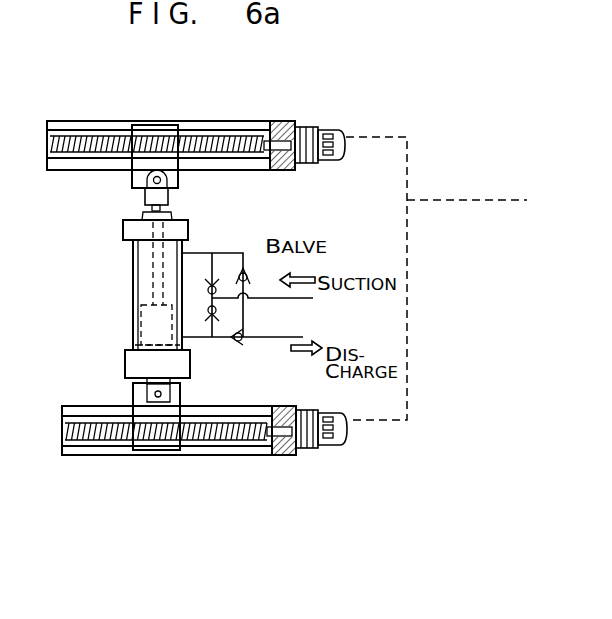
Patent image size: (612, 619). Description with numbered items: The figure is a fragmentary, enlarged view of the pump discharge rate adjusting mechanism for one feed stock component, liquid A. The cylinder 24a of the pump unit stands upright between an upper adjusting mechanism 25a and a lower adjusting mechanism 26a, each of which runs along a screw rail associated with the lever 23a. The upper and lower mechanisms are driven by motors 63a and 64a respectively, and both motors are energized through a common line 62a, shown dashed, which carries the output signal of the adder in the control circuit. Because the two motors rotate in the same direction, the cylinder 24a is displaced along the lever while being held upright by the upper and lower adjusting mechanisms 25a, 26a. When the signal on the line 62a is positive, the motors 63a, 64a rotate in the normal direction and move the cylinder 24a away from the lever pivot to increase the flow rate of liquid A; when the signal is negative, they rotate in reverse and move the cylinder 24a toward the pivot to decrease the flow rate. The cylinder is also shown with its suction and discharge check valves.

The lever 23a is at (227, 128).
The motor 63a is at (305, 131).
The line 62a is at (446, 200).
The motor 64a is at (310, 412).
The cylinder 24a is at (133, 320).
The upper adjusting mechanism 25a is at (178, 148).
The lower adjusting mechanism 26a is at (197, 427).